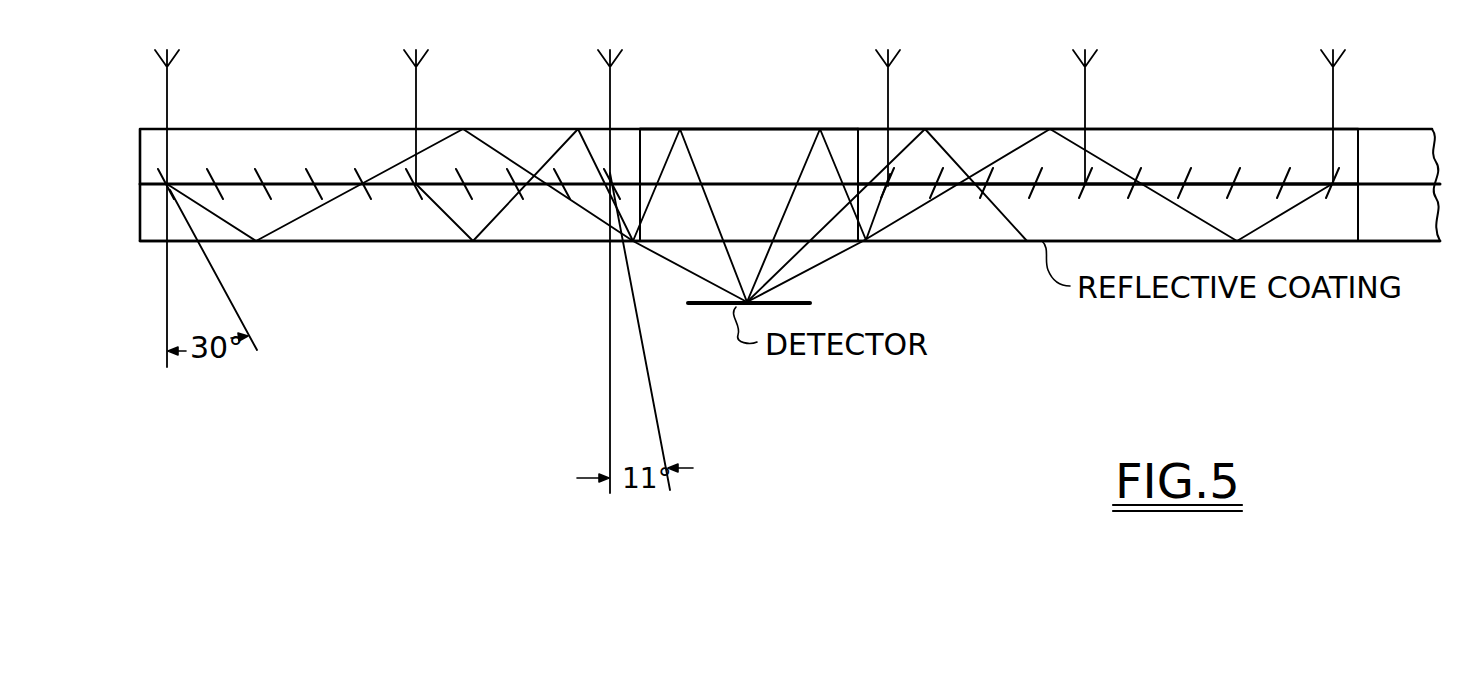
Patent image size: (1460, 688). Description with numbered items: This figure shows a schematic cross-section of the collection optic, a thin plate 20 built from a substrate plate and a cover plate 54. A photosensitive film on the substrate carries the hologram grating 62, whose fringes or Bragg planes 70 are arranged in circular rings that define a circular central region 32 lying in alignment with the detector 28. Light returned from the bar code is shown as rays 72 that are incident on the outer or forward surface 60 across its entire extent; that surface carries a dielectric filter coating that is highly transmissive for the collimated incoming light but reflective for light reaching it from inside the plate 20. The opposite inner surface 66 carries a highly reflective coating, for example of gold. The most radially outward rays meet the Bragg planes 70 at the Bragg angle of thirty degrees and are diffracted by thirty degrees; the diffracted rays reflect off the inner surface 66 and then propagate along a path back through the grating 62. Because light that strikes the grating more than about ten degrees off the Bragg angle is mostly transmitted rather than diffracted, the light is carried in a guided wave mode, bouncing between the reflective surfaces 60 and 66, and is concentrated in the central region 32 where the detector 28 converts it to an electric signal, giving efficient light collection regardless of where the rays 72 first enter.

The plate 20 is at (1347, 129).
The detector 28 is at (794, 302).
The circular central region 32 is at (748, 129).
The cover plate 54 is at (1143, 129).
The forward surface 60 is at (963, 129).
The hologram grating 62 is at (1272, 187).
The inner surface 66 is at (1090, 240).
The Bragg planes 70 is at (263, 183).
The rays 72 is at (167, 78).